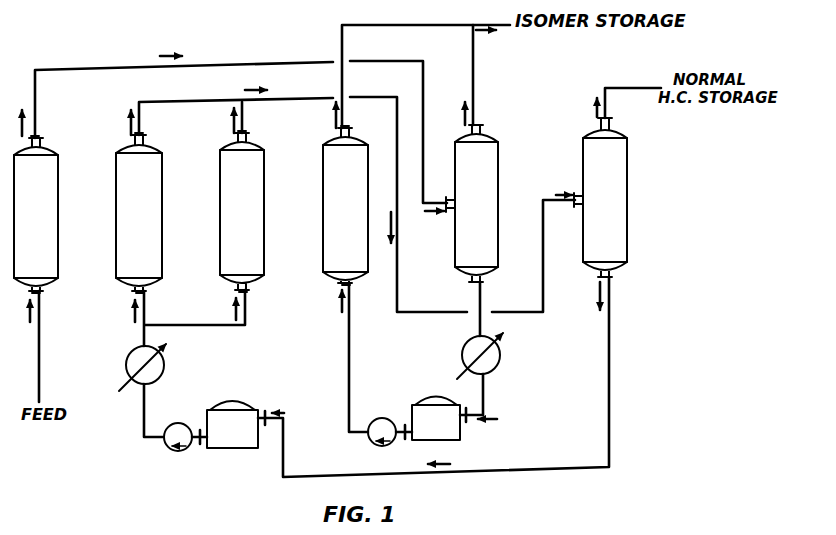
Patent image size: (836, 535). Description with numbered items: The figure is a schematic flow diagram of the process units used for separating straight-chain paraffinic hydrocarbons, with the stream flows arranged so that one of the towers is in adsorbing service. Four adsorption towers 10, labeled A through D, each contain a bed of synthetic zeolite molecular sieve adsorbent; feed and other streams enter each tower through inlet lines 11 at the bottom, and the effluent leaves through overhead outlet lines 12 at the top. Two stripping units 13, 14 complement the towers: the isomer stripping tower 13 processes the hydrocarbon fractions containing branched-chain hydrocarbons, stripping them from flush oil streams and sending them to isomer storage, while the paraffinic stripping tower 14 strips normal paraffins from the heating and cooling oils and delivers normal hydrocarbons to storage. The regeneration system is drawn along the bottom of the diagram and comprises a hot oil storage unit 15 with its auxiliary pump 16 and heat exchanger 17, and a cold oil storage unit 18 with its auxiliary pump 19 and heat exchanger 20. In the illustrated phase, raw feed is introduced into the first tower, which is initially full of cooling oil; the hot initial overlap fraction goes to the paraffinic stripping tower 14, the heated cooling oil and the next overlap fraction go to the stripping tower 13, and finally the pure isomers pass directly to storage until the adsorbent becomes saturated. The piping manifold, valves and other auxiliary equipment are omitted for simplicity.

The adsorption towers 10 is at (191, 209).
The inlet lines 11 is at (363, 298).
The overhead outlet lines 12 is at (352, 124).
The stripping unit 13 is at (472, 203).
The stripping unit 14 is at (600, 197).
The hot oil storage unit 15 is at (232, 424).
The pump 16 is at (164, 428).
The heat exchanger 17 is at (164, 370).
The cold oil storage unit 18 is at (436, 419).
The pump 19 is at (378, 418).
The heat exchanger 20 is at (491, 356).